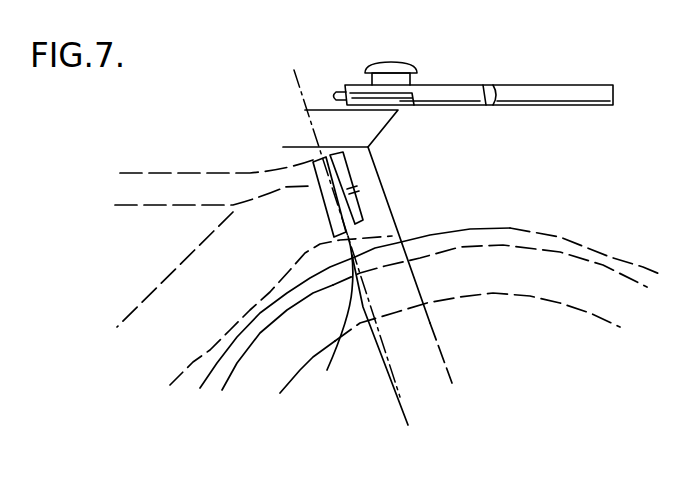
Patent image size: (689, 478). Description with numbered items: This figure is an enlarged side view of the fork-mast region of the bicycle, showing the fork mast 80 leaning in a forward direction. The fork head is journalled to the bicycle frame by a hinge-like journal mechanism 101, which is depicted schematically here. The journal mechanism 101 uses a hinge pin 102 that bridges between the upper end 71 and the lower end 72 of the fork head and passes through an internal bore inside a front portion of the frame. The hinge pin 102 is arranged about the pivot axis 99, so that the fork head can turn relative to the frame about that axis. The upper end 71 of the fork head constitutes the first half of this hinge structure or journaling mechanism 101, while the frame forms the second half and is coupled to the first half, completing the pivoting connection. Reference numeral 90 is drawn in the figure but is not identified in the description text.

The upper end 71 is at (283, 157).
The lower end 72 is at (363, 243).
The fork mast 80 is at (385, 126).
The spray gun 90 is at (282, 147).
The pivot axis 99 is at (300, 92).
The journal mechanism 101 is at (360, 330).
The hinge pin 102 is at (233, 211).